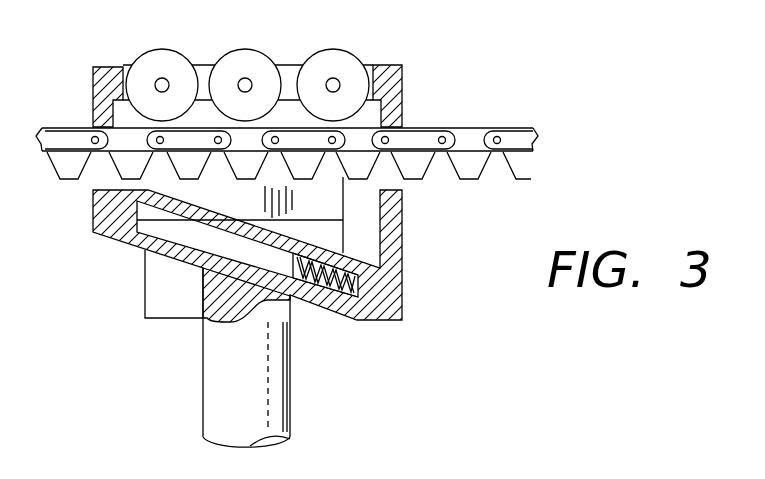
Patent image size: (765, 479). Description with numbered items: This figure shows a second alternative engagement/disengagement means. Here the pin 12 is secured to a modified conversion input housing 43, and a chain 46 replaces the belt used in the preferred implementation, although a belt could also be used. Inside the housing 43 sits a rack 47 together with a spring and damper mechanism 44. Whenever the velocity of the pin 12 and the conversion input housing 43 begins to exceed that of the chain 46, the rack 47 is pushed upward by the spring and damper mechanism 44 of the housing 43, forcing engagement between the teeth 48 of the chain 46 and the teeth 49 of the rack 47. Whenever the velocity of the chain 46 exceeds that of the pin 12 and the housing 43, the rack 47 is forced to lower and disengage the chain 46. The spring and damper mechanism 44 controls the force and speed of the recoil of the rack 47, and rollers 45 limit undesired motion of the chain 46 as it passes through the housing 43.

The pin 12 is at (222, 379).
The conversion input housing 43 is at (405, 282).
The spring and damper mechanism 44 is at (315, 285).
The rollers 45 is at (327, 62).
The chain 46 is at (425, 127).
The rack 47 is at (320, 237).
The teeth of chain 48 is at (113, 170).
The teeth of rack 49 is at (343, 192).